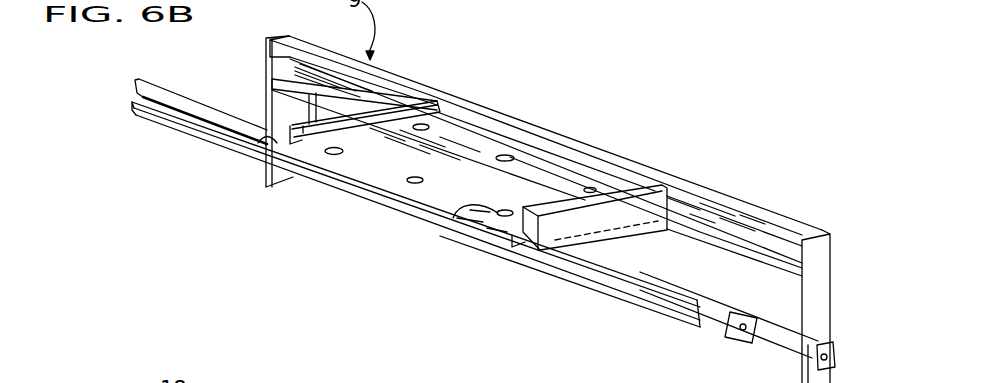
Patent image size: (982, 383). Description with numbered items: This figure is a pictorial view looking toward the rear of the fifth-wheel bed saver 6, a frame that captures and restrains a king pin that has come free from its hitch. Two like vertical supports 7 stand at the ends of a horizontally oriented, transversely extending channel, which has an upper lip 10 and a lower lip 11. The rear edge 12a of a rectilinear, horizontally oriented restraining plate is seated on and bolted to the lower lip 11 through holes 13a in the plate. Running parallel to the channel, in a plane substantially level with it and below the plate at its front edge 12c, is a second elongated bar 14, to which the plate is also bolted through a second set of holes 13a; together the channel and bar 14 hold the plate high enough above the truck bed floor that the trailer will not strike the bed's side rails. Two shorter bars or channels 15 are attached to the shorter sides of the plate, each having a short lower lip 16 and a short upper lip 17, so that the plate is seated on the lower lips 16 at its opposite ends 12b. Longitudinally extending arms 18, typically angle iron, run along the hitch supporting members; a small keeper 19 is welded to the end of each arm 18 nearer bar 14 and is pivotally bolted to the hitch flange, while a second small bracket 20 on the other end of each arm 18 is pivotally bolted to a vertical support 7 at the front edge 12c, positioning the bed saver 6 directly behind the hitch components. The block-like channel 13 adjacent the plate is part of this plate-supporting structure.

The bed saver 6 is at (710, 114).
The vertical supports 7 is at (266, 72).
The upper lip 10 is at (380, 68).
The lower lip 11 is at (393, 96).
The rear edge 12a is at (511, 146).
The opposite ends 12b is at (267, 140).
The front edge 12c is at (348, 188).
The channel bracket 13 is at (590, 190).
The holes 13a is at (418, 181).
The elongated bar 14 is at (572, 286).
The shorter bars or channels 15 is at (298, 118).
The short lower lip 16 is at (652, 237).
The short upper lip 17 is at (343, 128).
The longitudinally extending arms 18 is at (180, 97).
The keeper 19 is at (727, 330).
The bracket 20 is at (832, 345).